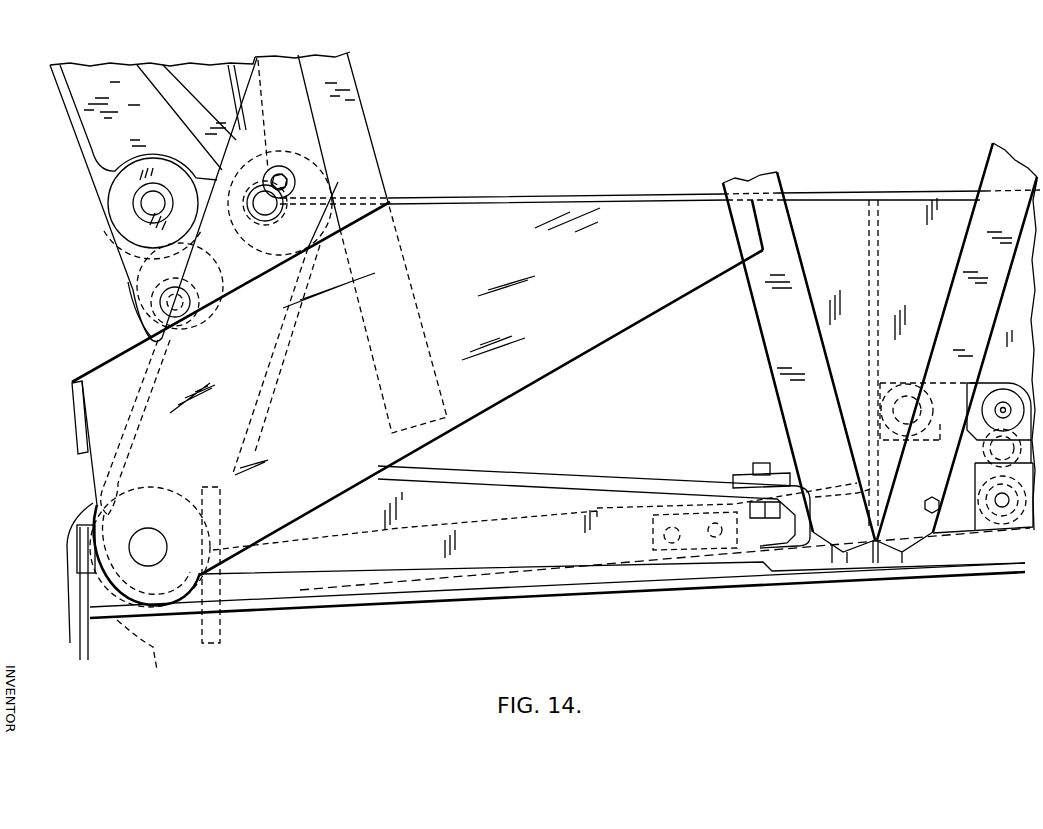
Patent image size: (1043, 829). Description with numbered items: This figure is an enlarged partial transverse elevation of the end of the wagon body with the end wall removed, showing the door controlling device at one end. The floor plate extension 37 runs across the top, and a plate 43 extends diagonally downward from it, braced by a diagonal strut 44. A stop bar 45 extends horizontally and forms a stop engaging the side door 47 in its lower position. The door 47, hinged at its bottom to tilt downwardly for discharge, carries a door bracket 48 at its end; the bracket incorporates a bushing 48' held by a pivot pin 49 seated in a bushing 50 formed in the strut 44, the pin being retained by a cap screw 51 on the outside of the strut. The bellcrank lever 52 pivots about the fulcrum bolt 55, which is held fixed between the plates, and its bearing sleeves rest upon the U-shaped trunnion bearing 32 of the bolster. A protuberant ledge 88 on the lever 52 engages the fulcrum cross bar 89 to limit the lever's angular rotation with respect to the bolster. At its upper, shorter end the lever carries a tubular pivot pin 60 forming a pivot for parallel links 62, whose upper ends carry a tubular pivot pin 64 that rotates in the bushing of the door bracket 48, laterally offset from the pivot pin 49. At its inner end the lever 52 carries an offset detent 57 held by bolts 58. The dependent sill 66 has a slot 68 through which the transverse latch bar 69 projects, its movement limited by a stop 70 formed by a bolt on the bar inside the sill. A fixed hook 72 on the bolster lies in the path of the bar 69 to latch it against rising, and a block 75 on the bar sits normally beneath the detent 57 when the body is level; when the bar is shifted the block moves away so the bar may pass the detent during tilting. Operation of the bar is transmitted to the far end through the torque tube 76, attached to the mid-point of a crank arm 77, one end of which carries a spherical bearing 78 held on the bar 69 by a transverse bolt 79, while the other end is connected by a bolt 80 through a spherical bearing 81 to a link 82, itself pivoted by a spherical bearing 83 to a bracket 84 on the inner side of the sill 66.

The U-shaped trunnion bearing 32 is at (97, 597).
The floor plate extension 37 is at (515, 198).
The plate 43 is at (543, 363).
The strut 44 is at (302, 120).
The stop bar 45 is at (77, 422).
The door 47 is at (200, 73).
The door bracket 48 is at (149, 199).
The bushing 48' is at (283, 312).
The pivot pin 49 is at (258, 198).
The bushing 50 is at (248, 214).
The cap screw 51 is at (275, 168).
The bellcrank lever 52 is at (533, 482).
The fulcrum bolt 55 is at (143, 550).
The offset detent 57 is at (732, 483).
The bolt 58 is at (755, 465).
The tubular pivot pin 60 is at (165, 300).
The parallel link 62 is at (135, 260).
The tubular pivot pin 64 is at (136, 208).
The dependent sill 66 is at (880, 273).
The slot 68 is at (857, 495).
The latch bar 69 is at (507, 537).
The stop 70 is at (926, 508).
The fixed hook 72 is at (80, 515).
The block 75 is at (733, 543).
The torque tube 76 is at (977, 432).
The crank arm 77 is at (973, 463).
The spherical bearing 78 is at (1007, 512).
The transverse bolt 79 is at (1000, 498).
The bolt 80 is at (1003, 402).
The spherical bearing 81 is at (987, 408).
The link 82 is at (970, 380).
The spherical bearing 83 is at (909, 384).
The bracket 84 is at (882, 383).
The protuberant ledge 88 is at (90, 497).
The fulcrum cross bar 89 is at (77, 528).